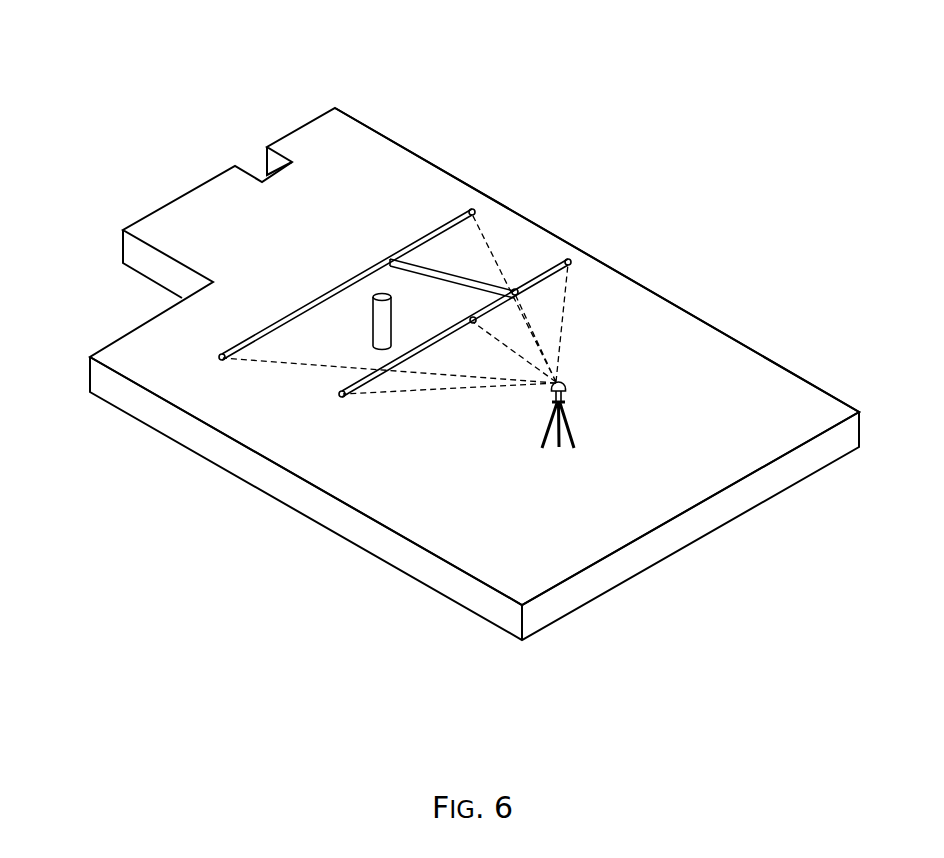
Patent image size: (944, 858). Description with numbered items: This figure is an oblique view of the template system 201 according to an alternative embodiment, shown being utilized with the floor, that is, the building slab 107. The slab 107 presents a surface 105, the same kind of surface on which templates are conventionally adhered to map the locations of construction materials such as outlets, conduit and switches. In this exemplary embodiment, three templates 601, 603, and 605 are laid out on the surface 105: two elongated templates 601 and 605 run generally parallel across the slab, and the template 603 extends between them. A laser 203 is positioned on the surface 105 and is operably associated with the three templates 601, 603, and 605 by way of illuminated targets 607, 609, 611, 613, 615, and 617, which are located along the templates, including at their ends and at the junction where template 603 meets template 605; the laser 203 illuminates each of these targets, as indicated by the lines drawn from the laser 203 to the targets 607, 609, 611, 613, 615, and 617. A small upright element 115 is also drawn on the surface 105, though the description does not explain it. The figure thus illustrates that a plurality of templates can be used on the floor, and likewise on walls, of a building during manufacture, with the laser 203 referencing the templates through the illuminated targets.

The template system 201 is at (128, 66).
The building slab 107 is at (133, 328).
The surface 105 is at (372, 233).
The reference pin 115 is at (372, 318).
The laser 203 is at (565, 390).
The template 601 is at (333, 293).
The template 603 is at (465, 278).
The template 605 is at (542, 279).
The illuminated target 607 is at (222, 357).
The illuminated target 609 is at (472, 212).
The illuminated target 611 is at (341, 395).
The illuminated target 613 is at (471, 324).
The illuminated target 615 is at (517, 293).
The illuminated target 617 is at (570, 262).